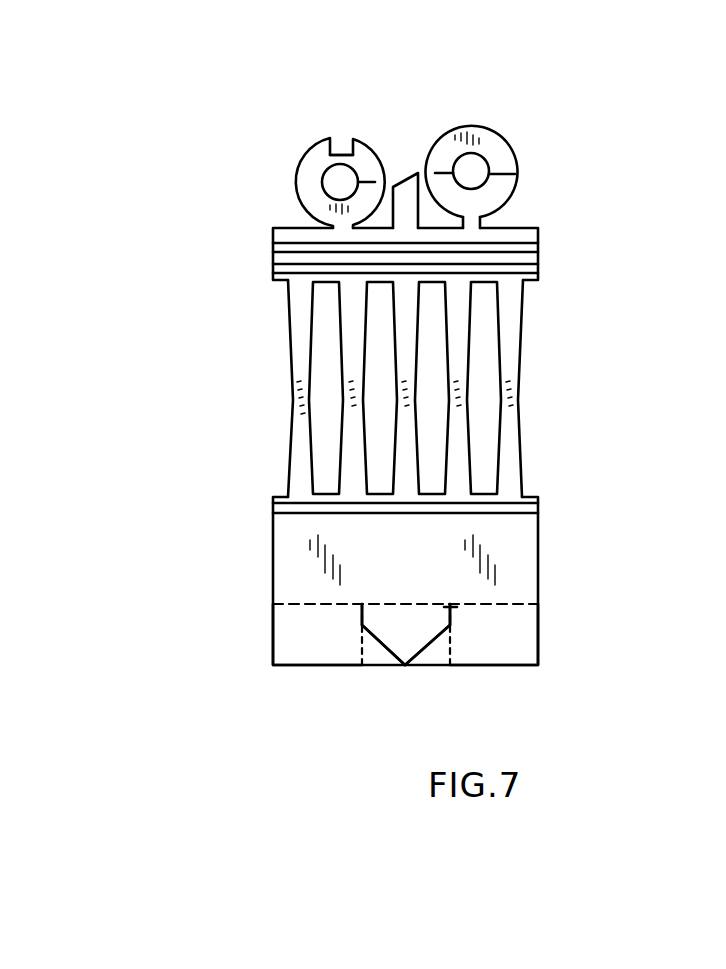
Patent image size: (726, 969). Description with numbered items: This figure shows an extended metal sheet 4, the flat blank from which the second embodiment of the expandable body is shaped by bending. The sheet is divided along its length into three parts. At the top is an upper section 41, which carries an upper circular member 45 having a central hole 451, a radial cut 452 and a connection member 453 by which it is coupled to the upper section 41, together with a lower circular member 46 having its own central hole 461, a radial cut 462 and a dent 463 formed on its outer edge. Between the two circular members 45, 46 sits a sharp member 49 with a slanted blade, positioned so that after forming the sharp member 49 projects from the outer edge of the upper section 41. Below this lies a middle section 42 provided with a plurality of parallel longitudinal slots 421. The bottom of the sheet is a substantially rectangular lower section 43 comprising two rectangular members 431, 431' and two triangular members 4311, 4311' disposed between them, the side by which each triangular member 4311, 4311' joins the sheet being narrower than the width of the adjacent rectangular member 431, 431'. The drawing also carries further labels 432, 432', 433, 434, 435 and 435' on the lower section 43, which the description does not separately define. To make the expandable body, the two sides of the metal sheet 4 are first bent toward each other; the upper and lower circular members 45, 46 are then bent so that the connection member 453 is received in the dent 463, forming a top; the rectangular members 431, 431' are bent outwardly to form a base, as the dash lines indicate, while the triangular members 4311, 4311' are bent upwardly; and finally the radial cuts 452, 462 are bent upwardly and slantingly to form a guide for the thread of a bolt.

The extended metal sheet 4 is at (590, 413).
The upper section 41 is at (265, 253).
The middle section 42 is at (481, 370).
The parallel longitudinal slots 421 is at (490, 383).
The lower section 43 is at (537, 555).
The rectangular member 431 is at (217, 631).
The rectangular member 431' is at (563, 612).
The left tab 432 is at (254, 563).
The right tab 432' is at (263, 712).
The V-shaped notch 433 is at (400, 627).
The parting line 434 is at (295, 600).
The left slit 435 is at (228, 646).
The right slit 435' is at (552, 634).
The triangular member 4311 is at (291, 684).
The triangular member 4311' is at (510, 672).
The upper circular member 45 is at (515, 175).
The central hole 451 is at (472, 173).
The radial cut 452 is at (443, 172).
The connection member 453 is at (472, 219).
The lower circular member 46 is at (308, 193).
The central hole 461 is at (338, 178).
The radial cut 462 is at (370, 176).
The dent 463 is at (342, 150).
The sharp member 49 is at (405, 197).